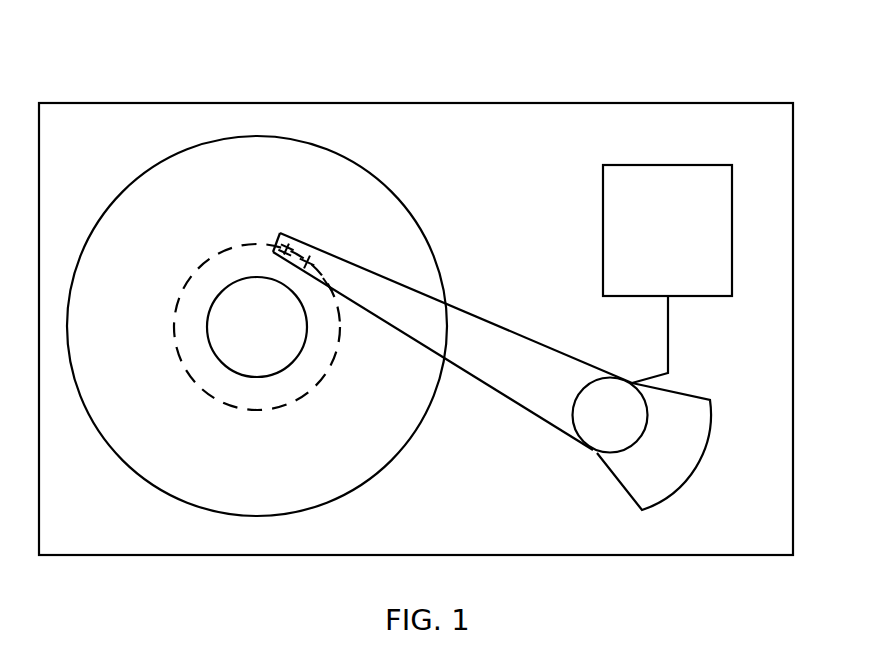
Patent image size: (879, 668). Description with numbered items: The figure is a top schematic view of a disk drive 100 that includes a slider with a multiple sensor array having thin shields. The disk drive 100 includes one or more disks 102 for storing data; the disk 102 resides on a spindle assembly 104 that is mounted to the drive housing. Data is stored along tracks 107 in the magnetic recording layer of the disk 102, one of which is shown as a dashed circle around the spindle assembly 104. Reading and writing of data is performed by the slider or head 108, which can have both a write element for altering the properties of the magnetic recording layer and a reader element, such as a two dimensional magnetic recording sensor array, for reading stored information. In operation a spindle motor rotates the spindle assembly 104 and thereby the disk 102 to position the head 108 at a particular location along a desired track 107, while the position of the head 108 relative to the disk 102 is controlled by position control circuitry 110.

The disk drive 100 is at (170, 67).
The disk 102 is at (390, 190).
The spindle assembly 104 is at (279, 334).
The track 107 is at (217, 257).
The slider 108 is at (301, 244).
The position control circuitry 110 is at (684, 244).